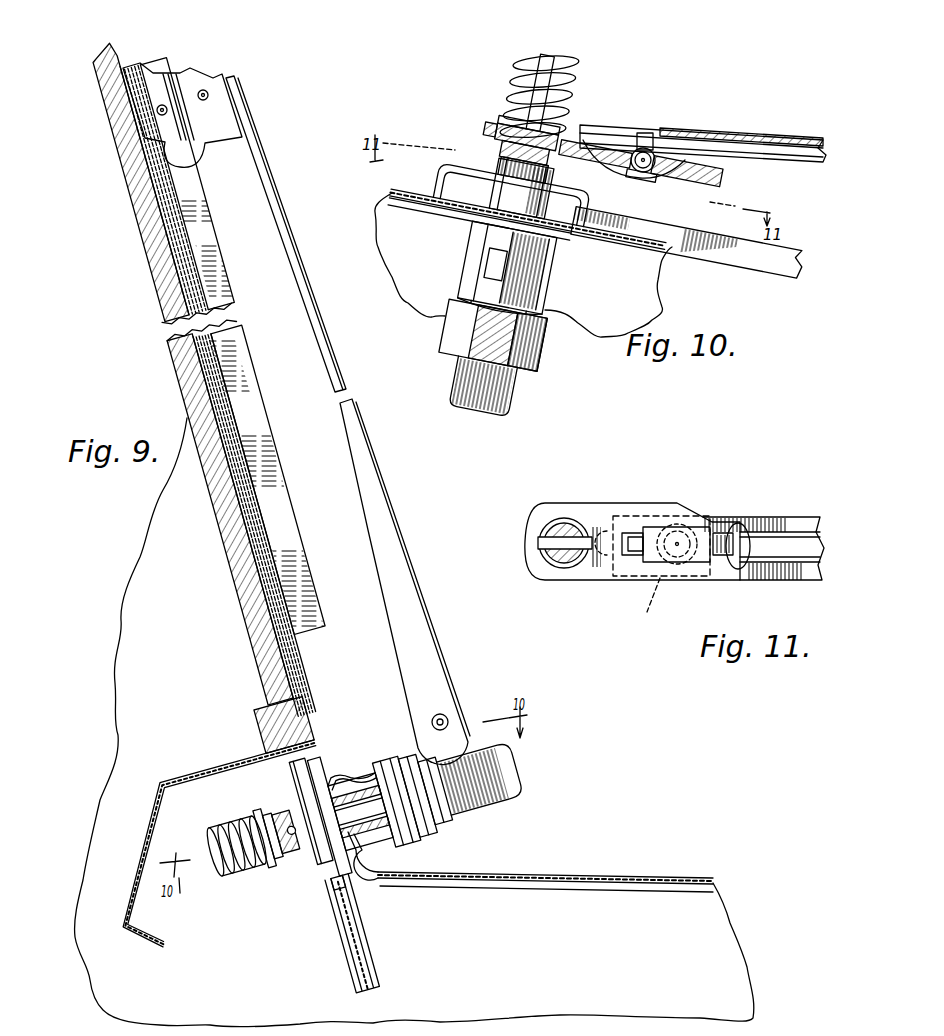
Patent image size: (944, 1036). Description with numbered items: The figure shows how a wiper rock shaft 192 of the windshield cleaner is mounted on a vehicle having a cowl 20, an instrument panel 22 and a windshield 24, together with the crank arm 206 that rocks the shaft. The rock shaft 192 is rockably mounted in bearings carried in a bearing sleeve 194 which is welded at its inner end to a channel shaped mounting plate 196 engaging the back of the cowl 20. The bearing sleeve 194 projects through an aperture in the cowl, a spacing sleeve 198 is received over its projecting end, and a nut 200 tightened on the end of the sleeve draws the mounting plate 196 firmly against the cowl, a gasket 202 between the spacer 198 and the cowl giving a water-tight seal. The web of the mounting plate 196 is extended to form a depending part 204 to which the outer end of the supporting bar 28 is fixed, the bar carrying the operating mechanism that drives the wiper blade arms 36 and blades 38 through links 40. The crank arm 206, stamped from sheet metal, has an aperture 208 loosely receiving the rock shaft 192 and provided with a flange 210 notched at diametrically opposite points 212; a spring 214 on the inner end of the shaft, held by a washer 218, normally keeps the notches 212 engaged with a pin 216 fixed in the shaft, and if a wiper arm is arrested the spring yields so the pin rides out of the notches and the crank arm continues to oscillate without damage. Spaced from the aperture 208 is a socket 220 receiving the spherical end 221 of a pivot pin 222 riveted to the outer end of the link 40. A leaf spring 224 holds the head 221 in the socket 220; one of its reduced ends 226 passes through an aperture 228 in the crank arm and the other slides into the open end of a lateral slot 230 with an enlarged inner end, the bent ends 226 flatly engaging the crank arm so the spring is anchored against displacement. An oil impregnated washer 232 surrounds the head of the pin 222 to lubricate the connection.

In FIG. 9, the cowl 20 is at (543, 877).
In FIG. 10, the cowl 20 is at (645, 250).
In FIG. 9, the instrument panel 22 is at (150, 825).
In FIG. 9, the windshield 24 is at (170, 333).
In FIG. 9, the supporting bar 28 is at (370, 947).
In FIG. 10, the supporting bar 28 is at (707, 240).
In FIG. 9, the wiper blade arms 36 is at (390, 537).
In FIG. 9, the blades 38 is at (267, 510).
In FIG. 10, the links 40 is at (789, 135).
In FIG. 11, the links 40 is at (803, 505).
In FIG. 9, the wiper rock shaft 192 is at (348, 800).
In FIG. 10, the wiper rock shaft 192 is at (523, 160).
In FIG. 11, the wiper rock shaft 192 is at (563, 528).
In FIG. 9, the bearing sleeve 194 is at (363, 770).
In FIG. 9, the mounting plate 196 is at (327, 893).
In FIG. 10, the mounting plate 196 is at (473, 233).
In FIG. 9, the spacing sleeve 198 is at (347, 760).
In FIG. 10, the spacing sleeve 198 is at (480, 260).
In FIG. 9, the nut 200 is at (420, 827).
In FIG. 10, the nut 200 is at (547, 297).
In FIG. 9, the gasket 202 is at (378, 862).
In FIG. 10, the gasket 202 is at (590, 230).
In FIG. 9, the depending part 204 is at (337, 927).
In FIG. 9, the crank arm 206 is at (283, 870).
In FIG. 10, the crank arm 206 is at (493, 127).
In FIG. 11, the crank arm 206 is at (597, 507).
In FIG. 10, the aperture 208 is at (510, 99).
In FIG. 10, the flange 210 is at (500, 137).
In FIG. 9, the notches 212 is at (275, 805).
In FIG. 9, the spring 214 is at (237, 875).
In FIG. 10, the spring 214 is at (573, 82).
In FIG. 9, the pin 216 is at (293, 827).
In FIG. 10, the pin 216 is at (547, 167).
In FIG. 11, the pin 216 is at (538, 543).
In FIG. 9, the washer 218 is at (207, 835).
In FIG. 10, the washer 218 is at (545, 68).
In FIG. 10, the socket 220 is at (663, 153).
In FIG. 10, the spherical end 221 is at (645, 182).
In FIG. 11, the spherical end 221 is at (647, 612).
In FIG. 10, the pivot pin 222 is at (680, 133).
In FIG. 10, the leaf spring 224 is at (670, 167).
In FIG. 11, the leaf spring 224 is at (700, 530).
In FIG. 10, the reduced ends 226 is at (587, 143).
In FIG. 11, the reduced ends 226 is at (633, 552).
In FIG. 10, the aperture 228 is at (650, 133).
In FIG. 11, the aperture 228 is at (632, 535).
In FIG. 11, the lateral slot 230 is at (737, 553).
In FIG. 10, the oil impregnated washer 232 is at (640, 168).